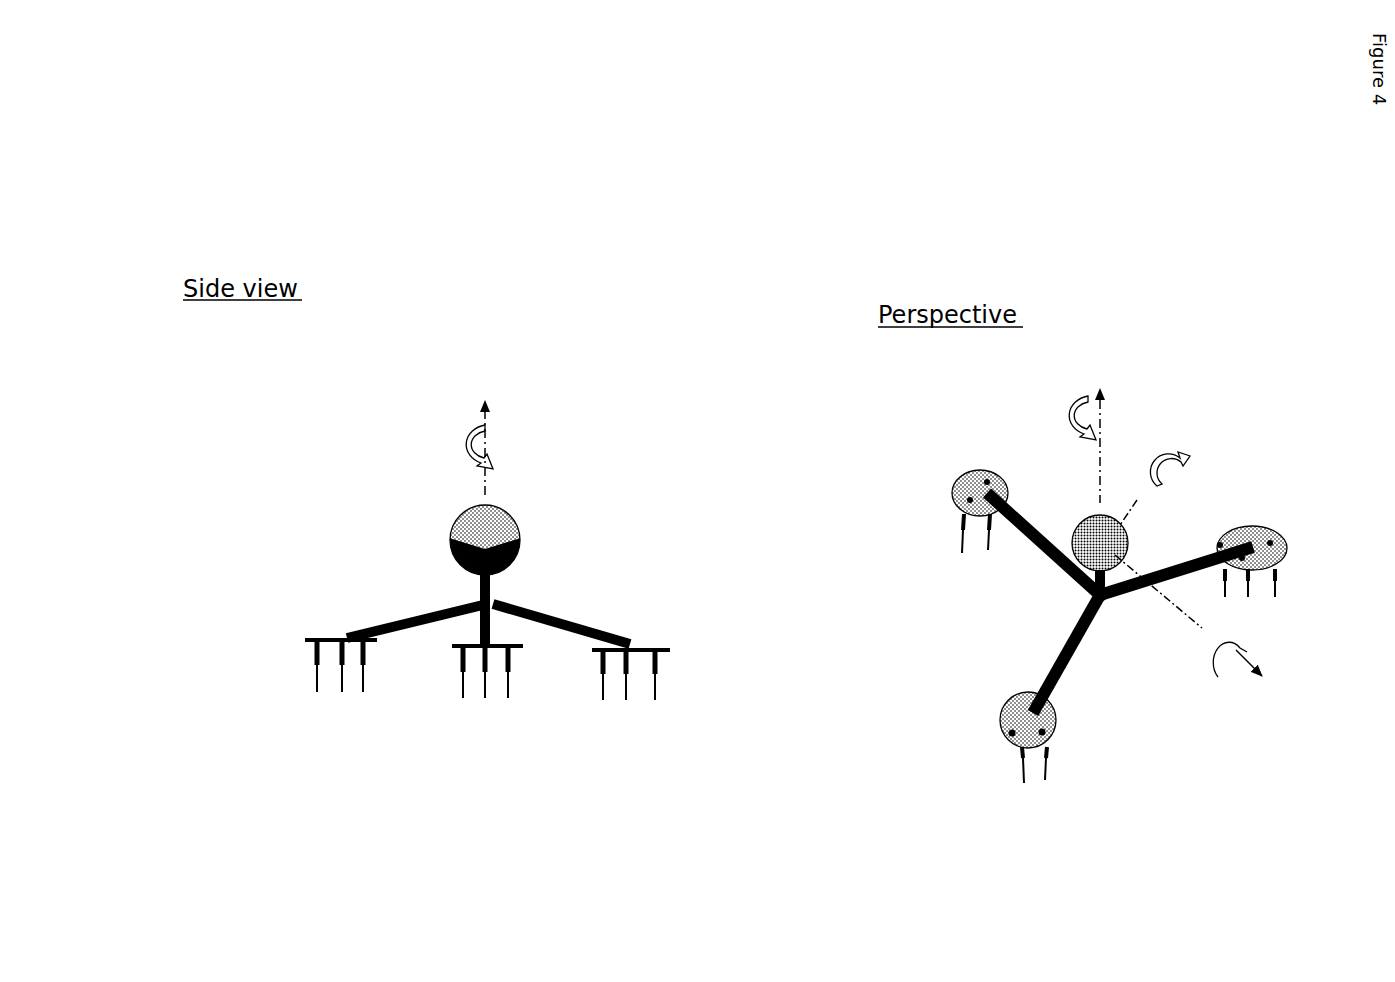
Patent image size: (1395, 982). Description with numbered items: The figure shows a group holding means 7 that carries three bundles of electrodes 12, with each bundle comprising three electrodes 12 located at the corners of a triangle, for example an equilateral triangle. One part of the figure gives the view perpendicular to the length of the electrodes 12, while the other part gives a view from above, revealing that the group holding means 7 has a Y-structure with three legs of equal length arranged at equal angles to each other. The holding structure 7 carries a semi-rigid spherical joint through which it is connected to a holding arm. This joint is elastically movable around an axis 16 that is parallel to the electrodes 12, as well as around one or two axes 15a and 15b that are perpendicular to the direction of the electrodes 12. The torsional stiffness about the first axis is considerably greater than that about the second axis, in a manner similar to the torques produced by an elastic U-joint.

The group holding means 7 is at (553, 605).
The electrodes 12 is at (363, 692).
The axis 15a is at (1098, 465).
The axis 15b is at (1177, 662).
The axis 16 is at (486, 470).